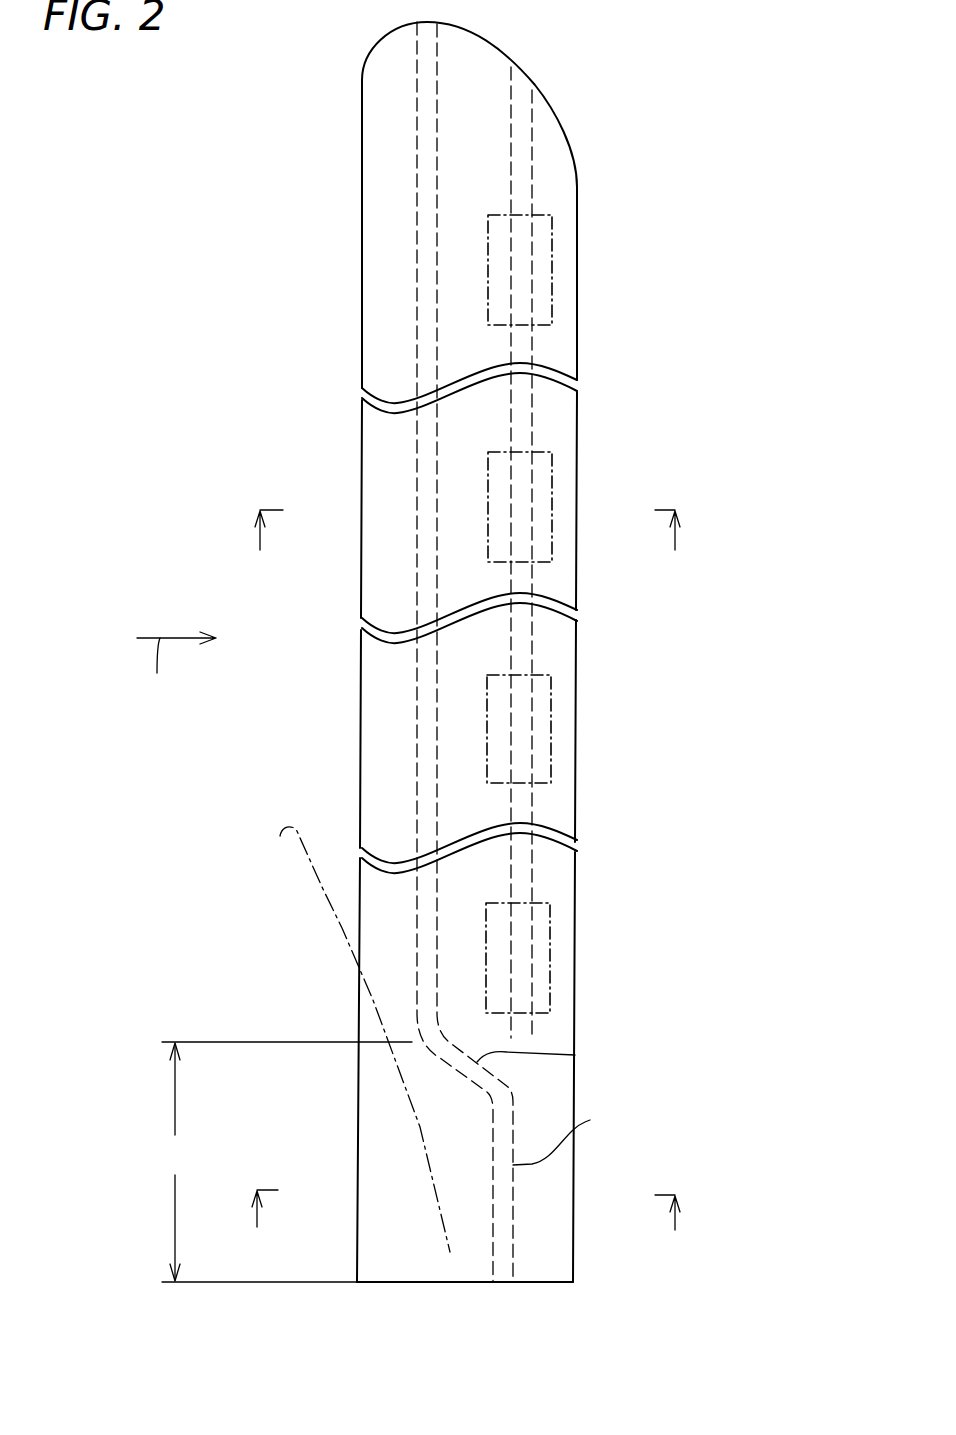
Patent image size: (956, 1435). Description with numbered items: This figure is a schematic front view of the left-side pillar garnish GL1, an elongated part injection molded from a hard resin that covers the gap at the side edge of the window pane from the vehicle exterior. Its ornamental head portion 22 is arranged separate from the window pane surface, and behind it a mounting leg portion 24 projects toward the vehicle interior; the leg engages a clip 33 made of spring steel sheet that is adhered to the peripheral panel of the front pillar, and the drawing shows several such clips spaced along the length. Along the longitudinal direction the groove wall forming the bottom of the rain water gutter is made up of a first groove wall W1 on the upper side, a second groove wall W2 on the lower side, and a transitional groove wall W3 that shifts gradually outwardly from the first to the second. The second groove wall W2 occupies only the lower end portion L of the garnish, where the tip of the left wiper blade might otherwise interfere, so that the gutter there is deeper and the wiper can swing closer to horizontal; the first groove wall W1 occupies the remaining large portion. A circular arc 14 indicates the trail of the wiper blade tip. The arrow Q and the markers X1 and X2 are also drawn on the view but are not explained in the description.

The pillar garnish GL1 is at (597, 341).
The circular arc 14 is at (322, 887).
The ornamental head portion 22 is at (390, 788).
The mounting leg portion 24 is at (530, 803).
The clip 33 is at (550, 720).
The first groove wall W1 is at (413, 723).
The second groove wall W2 is at (590, 1120).
The transitional groove wall W3 is at (575, 1055).
The lower end portion L is at (287, 1162).
The direction Q is at (176, 671).
The section line X1 is at (474, 547).
The section line X2 is at (469, 1231).